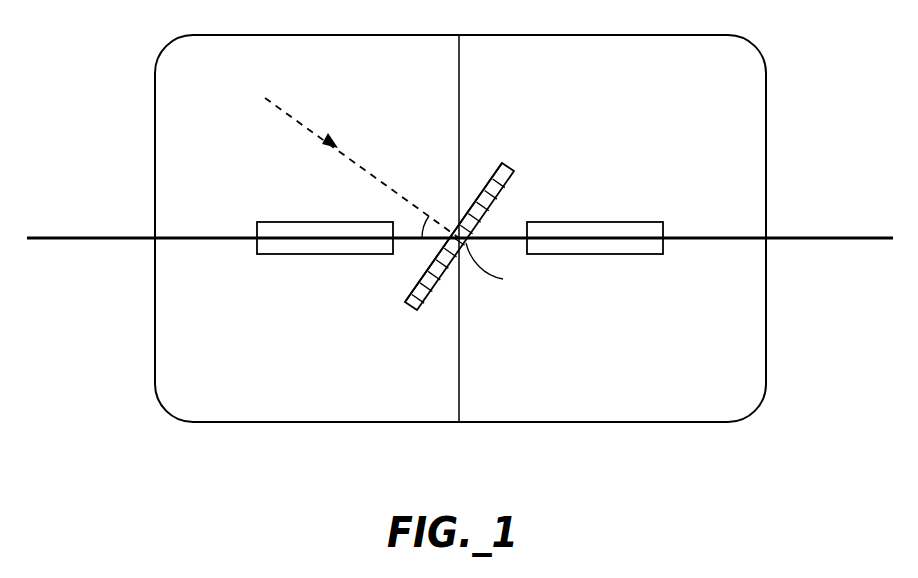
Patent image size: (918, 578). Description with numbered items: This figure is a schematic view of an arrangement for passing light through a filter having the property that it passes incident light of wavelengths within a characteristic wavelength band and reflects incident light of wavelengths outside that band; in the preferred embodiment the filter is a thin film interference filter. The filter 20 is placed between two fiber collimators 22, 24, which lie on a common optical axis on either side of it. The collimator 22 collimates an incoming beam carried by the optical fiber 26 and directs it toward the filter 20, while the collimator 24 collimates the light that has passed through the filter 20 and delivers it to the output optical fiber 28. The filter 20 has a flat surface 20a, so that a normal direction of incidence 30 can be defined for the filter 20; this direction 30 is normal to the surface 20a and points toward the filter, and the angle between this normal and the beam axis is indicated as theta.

The filter 20 is at (427, 298).
The flat surface 20a is at (418, 281).
The fiber collimator 22 is at (350, 255).
The fiber collimator 24 is at (637, 256).
The optical fiber 26 is at (115, 234).
The output optical fiber 28 is at (808, 238).
The normal direction of incidence 30 is at (348, 155).